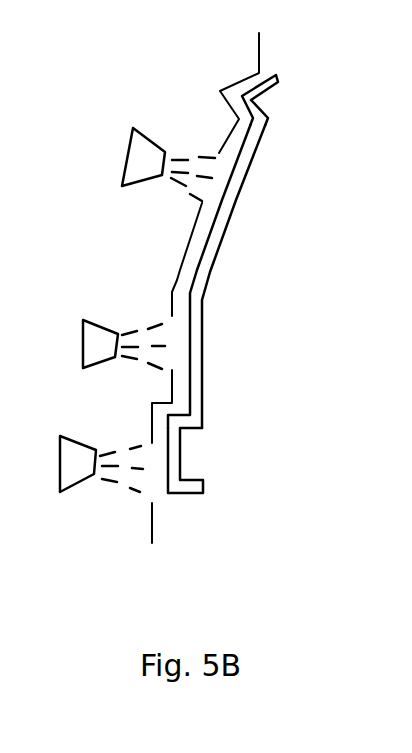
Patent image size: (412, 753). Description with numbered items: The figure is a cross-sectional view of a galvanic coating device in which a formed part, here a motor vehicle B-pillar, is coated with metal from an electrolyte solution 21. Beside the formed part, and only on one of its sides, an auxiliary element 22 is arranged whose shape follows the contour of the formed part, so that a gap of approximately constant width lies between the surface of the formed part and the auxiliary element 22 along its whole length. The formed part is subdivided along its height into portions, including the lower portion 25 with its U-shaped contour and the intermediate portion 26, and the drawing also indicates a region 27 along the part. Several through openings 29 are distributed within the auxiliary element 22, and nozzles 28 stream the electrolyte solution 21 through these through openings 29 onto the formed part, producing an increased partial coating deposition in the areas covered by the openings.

The electrolyte solution 21 is at (189, 185).
The auxiliary element 22 is at (181, 270).
The lower portion 25 is at (298, 75).
The intermediate portion 26 is at (297, 428).
The middle section of light guide 27 is at (293, 128).
The nozzle 28 is at (136, 160).
The through opening 29 is at (216, 157).